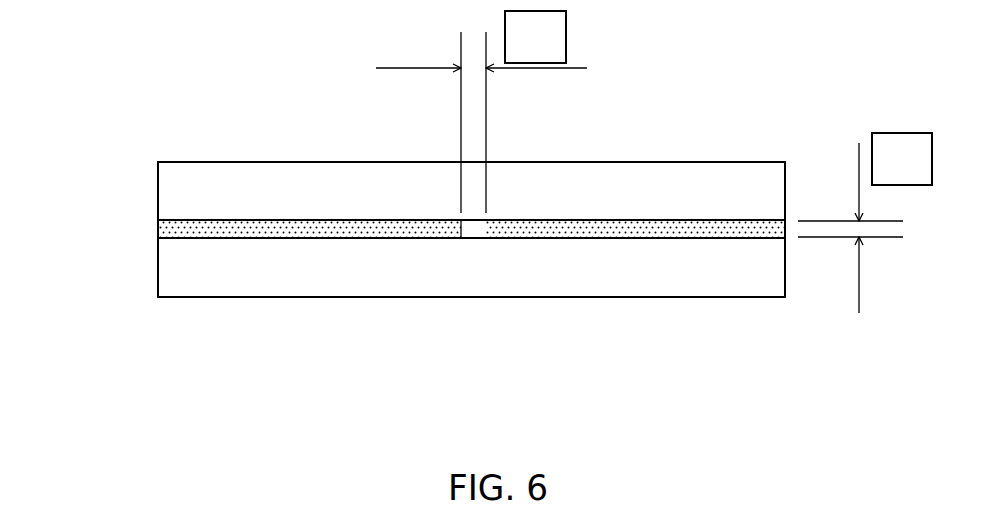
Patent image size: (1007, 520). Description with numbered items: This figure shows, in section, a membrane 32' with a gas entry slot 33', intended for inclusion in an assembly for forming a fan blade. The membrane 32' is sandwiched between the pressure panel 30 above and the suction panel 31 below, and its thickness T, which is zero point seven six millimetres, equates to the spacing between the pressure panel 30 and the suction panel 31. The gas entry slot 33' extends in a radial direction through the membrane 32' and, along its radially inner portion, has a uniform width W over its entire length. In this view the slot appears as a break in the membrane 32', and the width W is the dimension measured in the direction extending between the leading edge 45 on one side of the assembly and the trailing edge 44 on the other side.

The pressure panel 30 is at (185, 185).
The suction panel 31 is at (187, 274).
The membrane 32' is at (471, 142).
The gas entry slot 33' is at (501, 205).
The trailing edge 44 is at (786, 232).
The leading edge 45 is at (158, 222).